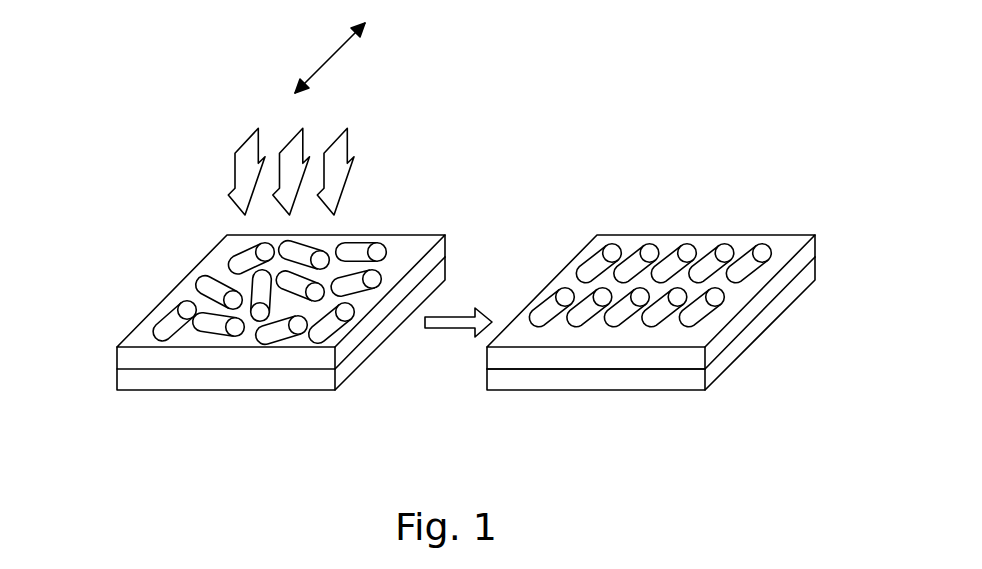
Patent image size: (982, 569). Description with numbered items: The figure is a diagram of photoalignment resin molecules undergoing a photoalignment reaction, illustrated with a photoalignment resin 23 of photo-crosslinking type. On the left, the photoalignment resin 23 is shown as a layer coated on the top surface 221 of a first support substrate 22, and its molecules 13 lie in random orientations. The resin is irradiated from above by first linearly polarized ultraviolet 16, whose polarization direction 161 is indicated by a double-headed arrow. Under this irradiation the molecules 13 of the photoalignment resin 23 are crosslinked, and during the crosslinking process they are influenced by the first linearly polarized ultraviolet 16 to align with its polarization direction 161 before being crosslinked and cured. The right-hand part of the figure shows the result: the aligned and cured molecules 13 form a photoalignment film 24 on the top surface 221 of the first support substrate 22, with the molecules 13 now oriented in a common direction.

The molecules 13 is at (313, 246).
The first linearly polarized ultraviolet 16 is at (363, 138).
The polarization direction 161 is at (358, 60).
The first support substrate 22 is at (123, 382).
The photoalignment resin 23 is at (123, 362).
The photoalignment film 24 is at (492, 361).
The top surface 221 is at (647, 368).